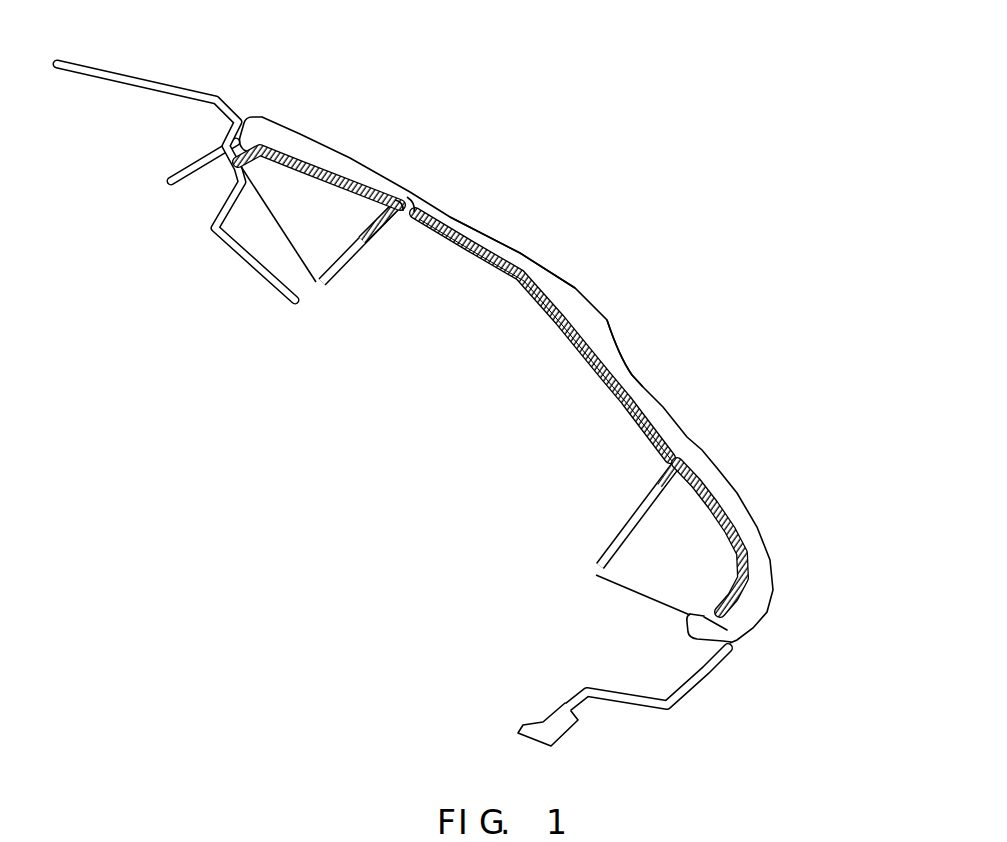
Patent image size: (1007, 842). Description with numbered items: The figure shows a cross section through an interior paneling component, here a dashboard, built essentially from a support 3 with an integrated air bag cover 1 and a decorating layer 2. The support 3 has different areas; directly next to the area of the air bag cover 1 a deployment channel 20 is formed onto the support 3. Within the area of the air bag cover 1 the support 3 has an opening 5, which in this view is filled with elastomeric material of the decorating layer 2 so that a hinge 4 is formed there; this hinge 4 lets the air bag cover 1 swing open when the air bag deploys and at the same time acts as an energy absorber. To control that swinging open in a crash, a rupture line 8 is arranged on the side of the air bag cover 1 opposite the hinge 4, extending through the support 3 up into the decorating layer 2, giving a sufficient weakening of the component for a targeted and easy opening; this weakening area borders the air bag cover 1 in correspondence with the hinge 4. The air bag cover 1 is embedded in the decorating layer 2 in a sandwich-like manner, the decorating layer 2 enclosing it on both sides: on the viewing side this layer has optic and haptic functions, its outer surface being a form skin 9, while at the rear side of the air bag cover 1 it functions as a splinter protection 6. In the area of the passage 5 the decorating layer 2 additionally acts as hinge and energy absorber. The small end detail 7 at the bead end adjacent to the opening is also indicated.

The air bag cover 1 is at (573, 310).
The decorating layer 2 is at (624, 374).
The support 3 is at (292, 157).
The hinge 4 is at (409, 195).
The opening 5 is at (392, 210).
The splinter protection 6 is at (523, 307).
The bead end 7 is at (403, 214).
The rupture line 8 is at (695, 433).
The form skin 9 is at (516, 250).
The deployment channel 20 is at (322, 282).